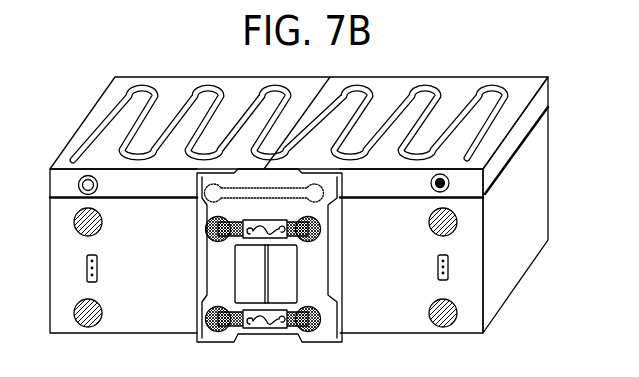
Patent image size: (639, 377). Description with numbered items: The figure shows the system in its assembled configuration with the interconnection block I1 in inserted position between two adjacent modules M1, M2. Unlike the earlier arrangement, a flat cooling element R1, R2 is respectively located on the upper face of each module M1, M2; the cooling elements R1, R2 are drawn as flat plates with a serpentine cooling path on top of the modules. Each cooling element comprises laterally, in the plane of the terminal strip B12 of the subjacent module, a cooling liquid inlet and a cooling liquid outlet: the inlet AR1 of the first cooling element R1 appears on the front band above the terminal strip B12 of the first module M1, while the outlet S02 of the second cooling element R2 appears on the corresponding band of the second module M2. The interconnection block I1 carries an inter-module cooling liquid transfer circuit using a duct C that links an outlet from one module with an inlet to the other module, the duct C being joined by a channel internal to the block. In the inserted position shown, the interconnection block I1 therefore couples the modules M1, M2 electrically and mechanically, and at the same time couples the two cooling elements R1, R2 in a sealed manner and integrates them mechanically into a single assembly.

The flat cooling element R1 is at (100, 97).
The flat cooling element R2 is at (499, 158).
The module M1 is at (58, 207).
The module M2 is at (503, 288).
The terminal strip B12 is at (75, 309).
The cooling liquid inlet AR1 is at (100, 188).
The cooling liquid outlet S02 is at (431, 183).
The duct C is at (197, 195).
The interconnection block I1 is at (213, 281).